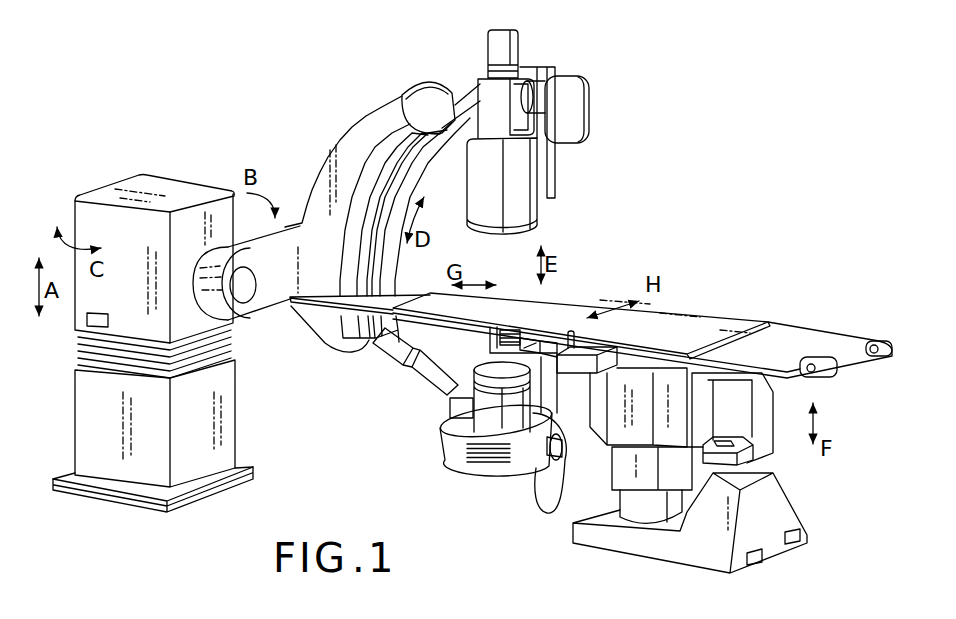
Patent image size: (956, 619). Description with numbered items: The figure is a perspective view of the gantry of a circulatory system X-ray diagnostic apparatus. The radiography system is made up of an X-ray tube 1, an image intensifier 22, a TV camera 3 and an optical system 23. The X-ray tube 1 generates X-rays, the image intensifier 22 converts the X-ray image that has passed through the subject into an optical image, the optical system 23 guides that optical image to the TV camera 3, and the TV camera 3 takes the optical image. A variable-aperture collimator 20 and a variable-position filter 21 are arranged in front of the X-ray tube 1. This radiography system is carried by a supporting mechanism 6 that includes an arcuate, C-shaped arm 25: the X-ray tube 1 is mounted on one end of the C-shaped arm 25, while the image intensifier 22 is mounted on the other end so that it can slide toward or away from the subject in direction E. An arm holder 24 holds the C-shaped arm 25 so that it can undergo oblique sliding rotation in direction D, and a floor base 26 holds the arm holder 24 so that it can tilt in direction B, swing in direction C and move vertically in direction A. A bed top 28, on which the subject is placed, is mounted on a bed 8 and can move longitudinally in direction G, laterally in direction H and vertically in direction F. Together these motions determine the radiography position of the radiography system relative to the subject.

The X-ray tube 1 is at (467, 468).
The TV camera 3 is at (522, 52).
The supporting mechanism 6 is at (333, 120).
The bed 8 is at (787, 305).
The variable-aperture collimator 20 is at (470, 410).
The variable-position filter 21 is at (492, 368).
The image intensifier 22 is at (545, 220).
The optical system 23 is at (483, 78).
The arm holder 24 is at (388, 102).
The C-shaped arm 25 is at (460, 93).
The floor base 26 is at (240, 437).
The bed top 28 is at (683, 316).